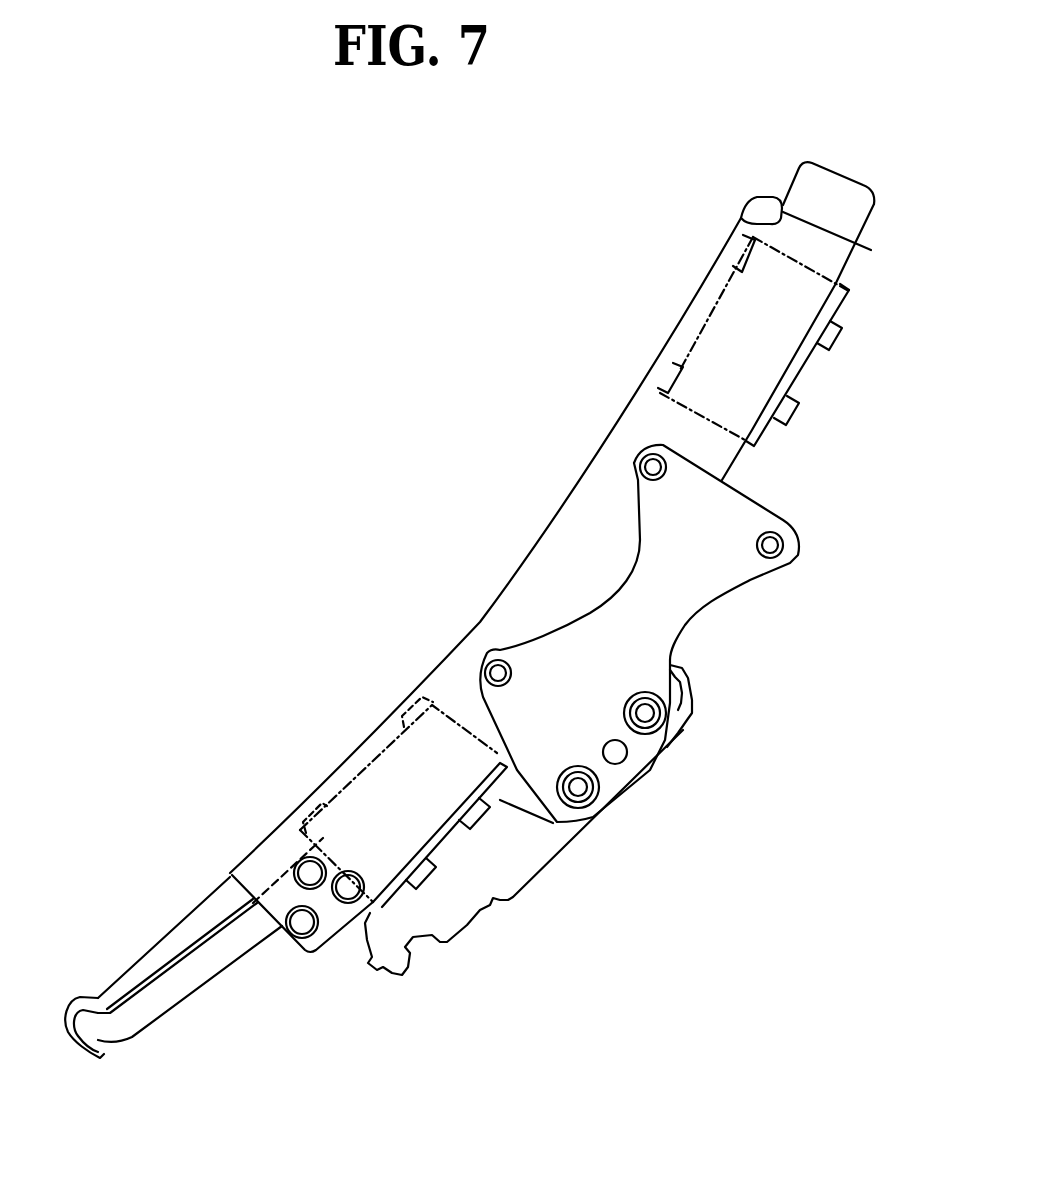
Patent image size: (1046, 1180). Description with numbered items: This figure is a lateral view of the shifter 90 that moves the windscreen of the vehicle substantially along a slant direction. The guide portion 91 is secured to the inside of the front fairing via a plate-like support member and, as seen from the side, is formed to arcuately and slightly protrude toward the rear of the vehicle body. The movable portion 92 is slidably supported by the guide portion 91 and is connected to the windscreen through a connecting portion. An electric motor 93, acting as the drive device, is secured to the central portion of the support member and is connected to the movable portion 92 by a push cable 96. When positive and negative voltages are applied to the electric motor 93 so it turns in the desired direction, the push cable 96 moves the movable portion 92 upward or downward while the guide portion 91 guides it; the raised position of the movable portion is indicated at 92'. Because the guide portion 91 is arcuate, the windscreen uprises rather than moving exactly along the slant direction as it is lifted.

The shifter 90 is at (705, 233).
The guide portion 91 is at (520, 563).
The movable portion 92 is at (358, 787).
The movable portion in upper position 92' is at (678, 340).
The electric motor 93 is at (693, 704).
The push cable 96 is at (200, 970).